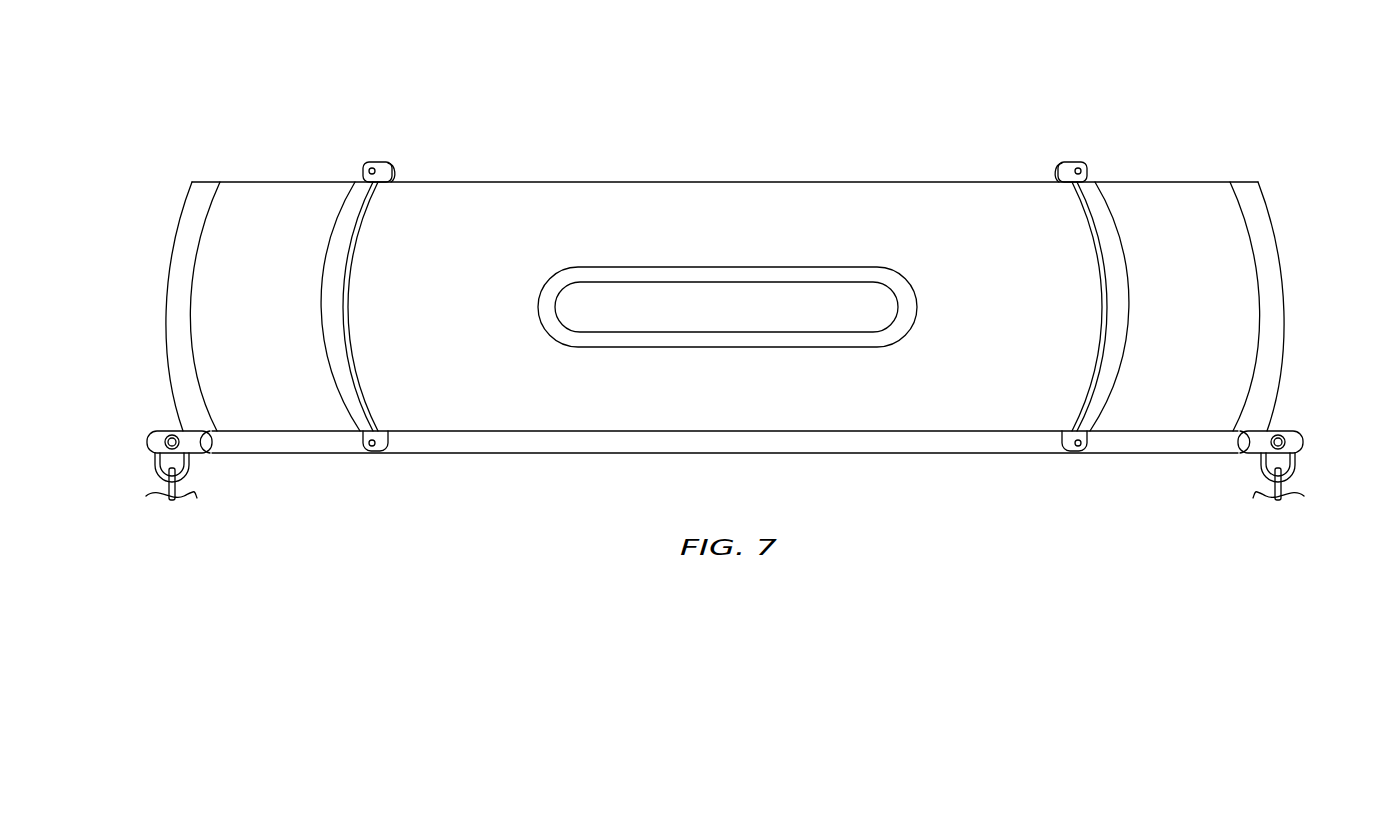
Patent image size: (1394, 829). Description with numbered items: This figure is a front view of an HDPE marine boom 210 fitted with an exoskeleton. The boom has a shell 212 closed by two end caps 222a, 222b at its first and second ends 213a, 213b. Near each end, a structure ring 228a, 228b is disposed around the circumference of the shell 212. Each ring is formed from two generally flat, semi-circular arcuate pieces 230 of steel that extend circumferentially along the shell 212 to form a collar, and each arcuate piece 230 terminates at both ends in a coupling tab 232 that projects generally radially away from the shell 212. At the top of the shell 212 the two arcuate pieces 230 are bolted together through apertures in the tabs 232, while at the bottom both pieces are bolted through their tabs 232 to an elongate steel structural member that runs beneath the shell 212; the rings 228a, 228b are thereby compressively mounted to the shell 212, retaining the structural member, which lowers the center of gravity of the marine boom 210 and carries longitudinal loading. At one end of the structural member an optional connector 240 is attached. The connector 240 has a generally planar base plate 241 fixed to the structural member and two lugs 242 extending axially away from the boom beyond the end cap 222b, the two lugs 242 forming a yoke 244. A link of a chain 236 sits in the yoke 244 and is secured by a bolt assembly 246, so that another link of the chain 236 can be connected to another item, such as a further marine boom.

The marine boom 210 is at (764, 80).
The shell 212 is at (925, 207).
The first end 213a is at (203, 153).
The second end 213b is at (1249, 153).
The end cap 222a is at (178, 250).
The end cap 222b is at (1275, 250).
The structure ring 228a is at (343, 215).
The structure ring 228b is at (1112, 215).
The arcuate piece 230 is at (338, 330).
The coupling tab 232 is at (394, 181).
The chain 236 is at (155, 488).
The connector 240 is at (146, 404).
The base plate 241 is at (206, 453).
The lug 242 is at (150, 441).
The yoke 244 is at (136, 417).
The bolt assembly 246 is at (175, 428).